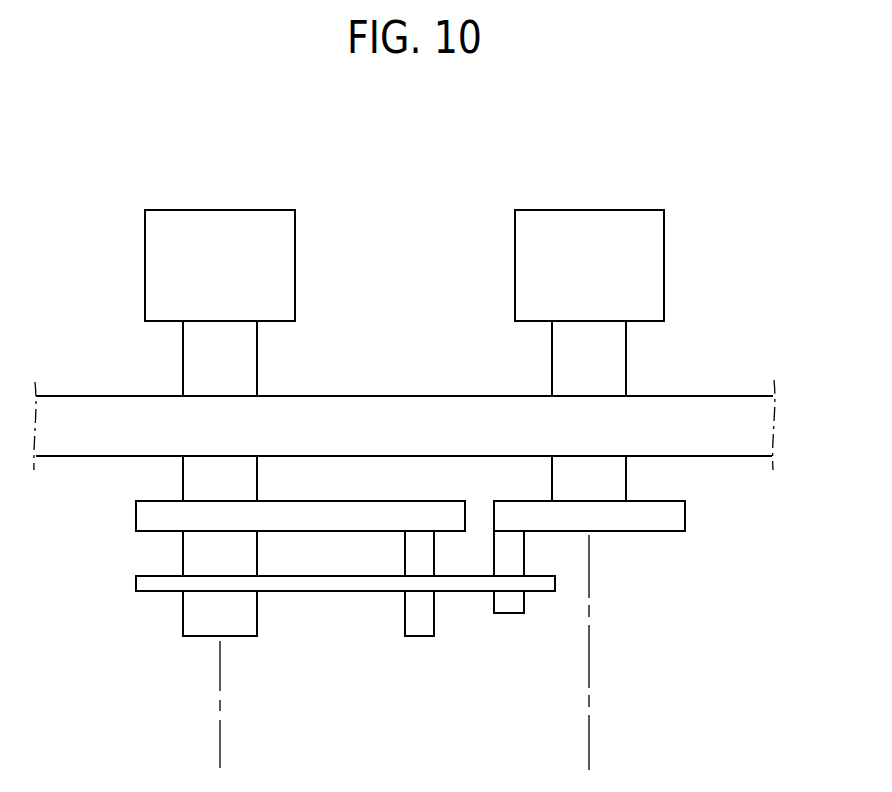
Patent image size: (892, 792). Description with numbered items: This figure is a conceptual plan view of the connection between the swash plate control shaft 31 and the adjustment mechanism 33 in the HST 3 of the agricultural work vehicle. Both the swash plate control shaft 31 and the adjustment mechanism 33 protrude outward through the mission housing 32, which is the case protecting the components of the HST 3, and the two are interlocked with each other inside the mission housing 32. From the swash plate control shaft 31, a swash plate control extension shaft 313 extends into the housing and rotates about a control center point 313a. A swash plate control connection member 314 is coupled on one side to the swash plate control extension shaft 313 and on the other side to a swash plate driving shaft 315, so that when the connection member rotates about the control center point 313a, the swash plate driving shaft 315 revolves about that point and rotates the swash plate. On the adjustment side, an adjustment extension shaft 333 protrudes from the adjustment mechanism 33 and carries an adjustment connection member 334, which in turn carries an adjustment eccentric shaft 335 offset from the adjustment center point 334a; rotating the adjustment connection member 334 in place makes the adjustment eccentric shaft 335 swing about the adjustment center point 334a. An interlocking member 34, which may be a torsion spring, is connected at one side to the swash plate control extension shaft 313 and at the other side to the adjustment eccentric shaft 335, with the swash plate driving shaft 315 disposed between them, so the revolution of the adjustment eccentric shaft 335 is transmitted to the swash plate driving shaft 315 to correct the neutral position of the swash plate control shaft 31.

The HST 3 is at (66, 131).
The swash plate control shaft 31 is at (266, 230).
The mission housing 32 is at (411, 415).
The adjustment mechanism 33 is at (635, 230).
The interlocking member 34 is at (352, 586).
The swash plate control extension shaft 313 is at (198, 615).
The control center point 313a is at (222, 741).
The swash plate control connection member 314 is at (150, 514).
The swash plate driving shaft 315 is at (424, 623).
The adjustment extension shaft 333 is at (616, 478).
The adjustment connection member 334 is at (676, 520).
The adjustment center point 334a is at (591, 743).
The adjustment eccentric shaft 335 is at (513, 600).